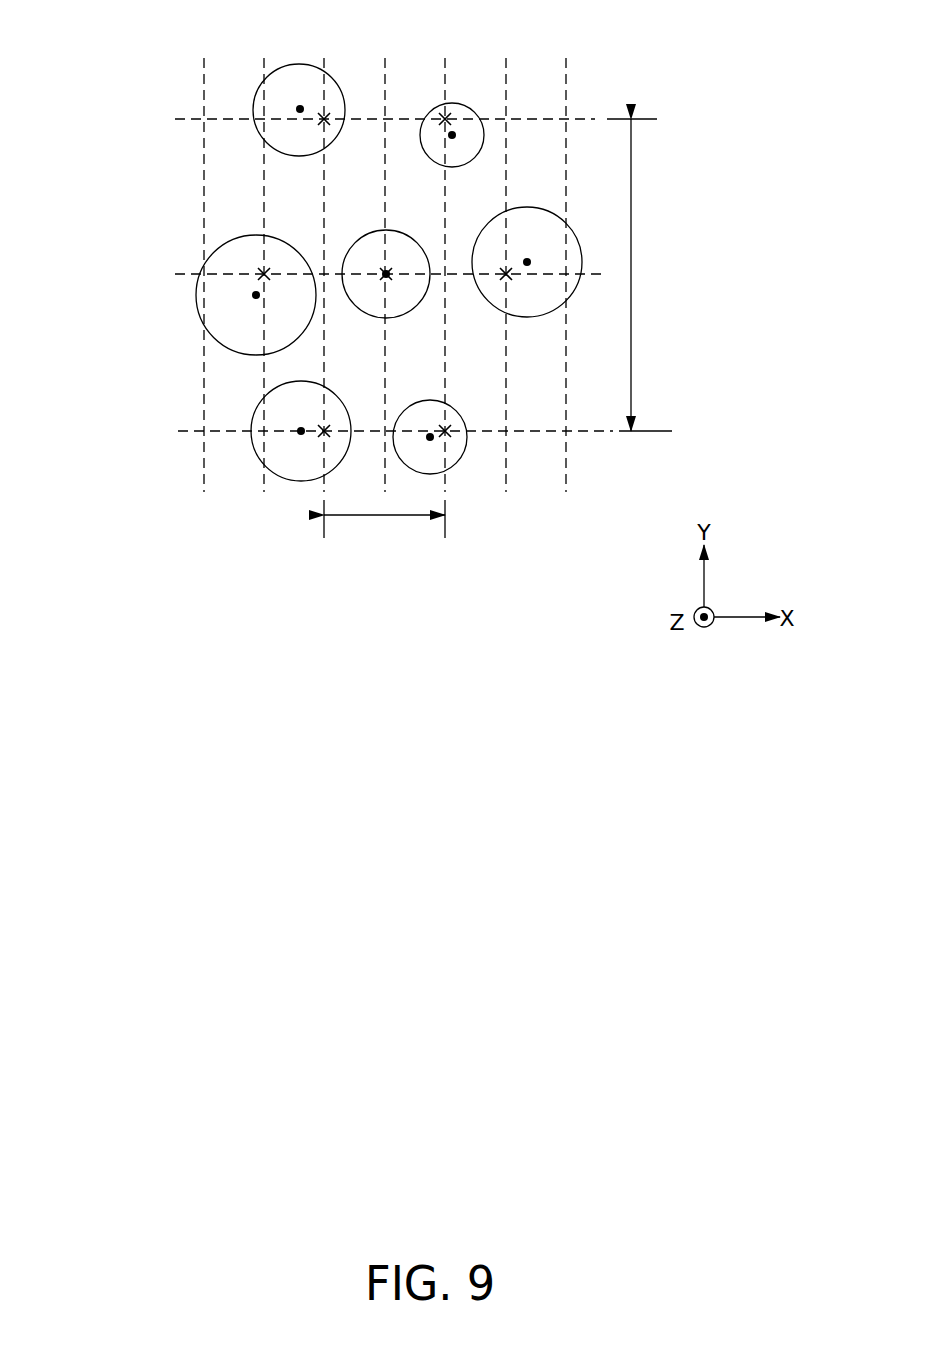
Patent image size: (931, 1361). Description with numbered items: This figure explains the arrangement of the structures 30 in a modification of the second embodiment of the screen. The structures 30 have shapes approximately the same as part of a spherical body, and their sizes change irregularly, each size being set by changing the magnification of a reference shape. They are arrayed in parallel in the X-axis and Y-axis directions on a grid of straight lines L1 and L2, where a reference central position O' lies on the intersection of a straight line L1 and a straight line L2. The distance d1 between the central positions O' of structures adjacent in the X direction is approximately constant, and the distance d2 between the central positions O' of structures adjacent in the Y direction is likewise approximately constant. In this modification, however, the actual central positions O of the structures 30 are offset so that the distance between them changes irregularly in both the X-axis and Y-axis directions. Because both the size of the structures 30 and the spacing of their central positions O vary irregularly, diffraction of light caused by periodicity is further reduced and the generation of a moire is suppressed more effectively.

The structure 30 is at (462, 102).
The central position O is at (385, 221).
The central position O' is at (494, 521).
The straight line L1 is at (253, 465).
The straight line L2 is at (182, 432).
The distance d1 is at (384, 525).
The distance d2 is at (639, 275).